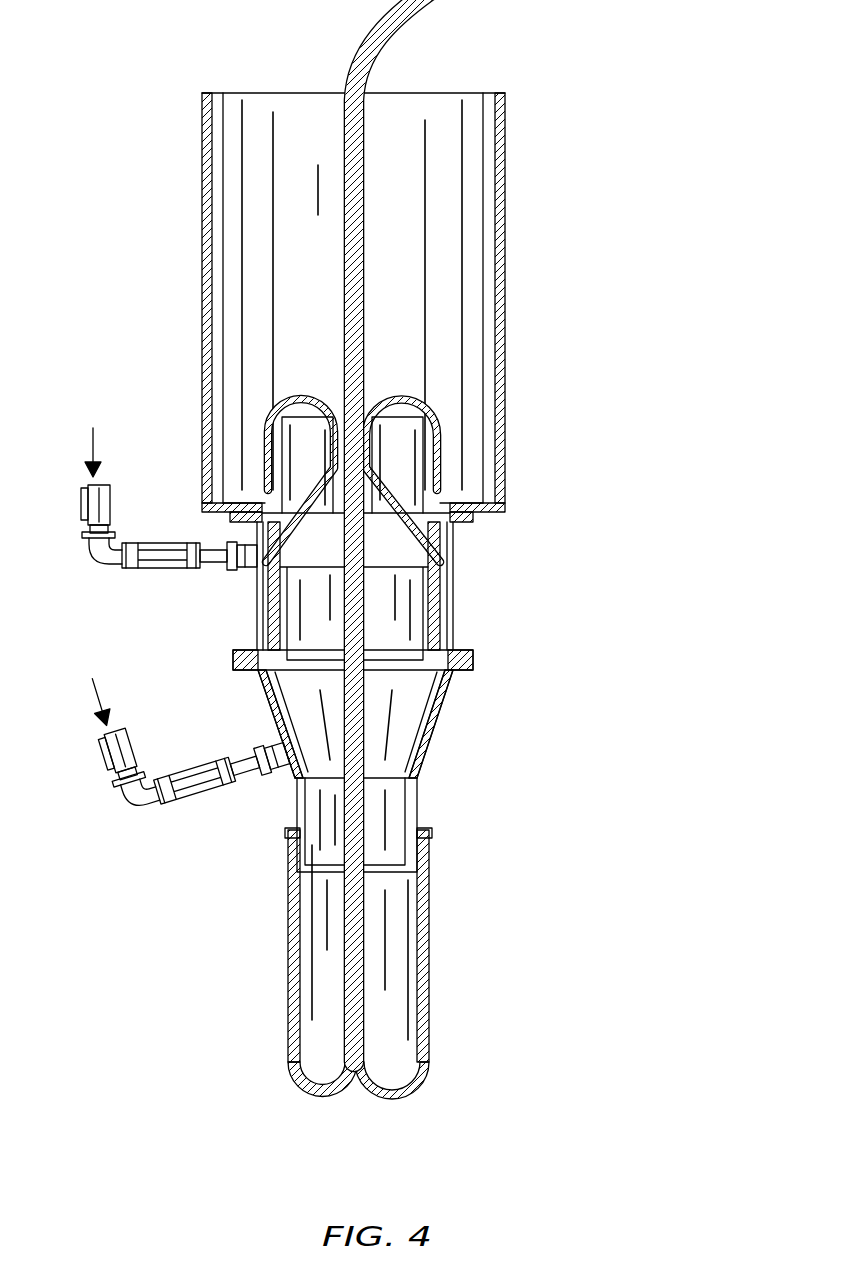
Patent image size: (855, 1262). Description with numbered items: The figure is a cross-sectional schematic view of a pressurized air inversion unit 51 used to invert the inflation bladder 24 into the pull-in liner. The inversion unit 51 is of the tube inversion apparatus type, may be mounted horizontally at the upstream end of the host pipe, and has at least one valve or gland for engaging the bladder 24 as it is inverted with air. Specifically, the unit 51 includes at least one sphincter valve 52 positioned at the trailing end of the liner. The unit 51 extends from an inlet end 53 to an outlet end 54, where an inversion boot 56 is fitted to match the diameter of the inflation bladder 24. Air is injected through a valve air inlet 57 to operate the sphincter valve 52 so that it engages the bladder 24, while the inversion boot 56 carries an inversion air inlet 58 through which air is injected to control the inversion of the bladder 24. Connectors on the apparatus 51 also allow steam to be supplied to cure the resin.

The inlet end 53 is at (260, 76).
The inflation bladder 24 is at (392, 38).
The sphincter valve 52 is at (398, 455).
The inversion unit 51 is at (486, 557).
The outlet end 54 is at (445, 740).
The inversion boot 56 is at (310, 818).
The valve air inlet 57 is at (103, 560).
The inversion air inlet 58 is at (142, 803).